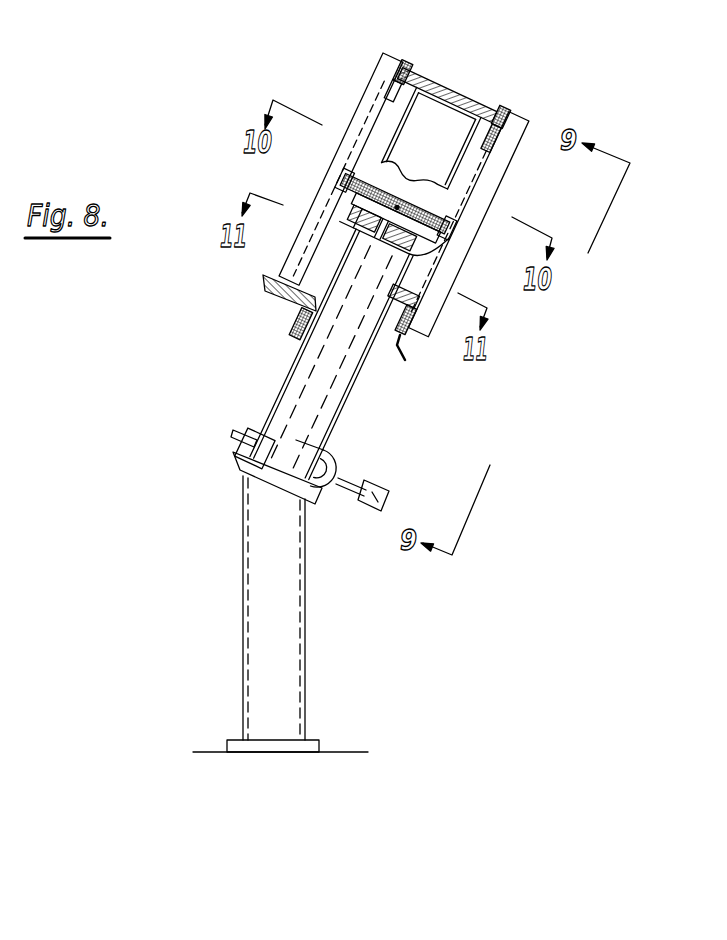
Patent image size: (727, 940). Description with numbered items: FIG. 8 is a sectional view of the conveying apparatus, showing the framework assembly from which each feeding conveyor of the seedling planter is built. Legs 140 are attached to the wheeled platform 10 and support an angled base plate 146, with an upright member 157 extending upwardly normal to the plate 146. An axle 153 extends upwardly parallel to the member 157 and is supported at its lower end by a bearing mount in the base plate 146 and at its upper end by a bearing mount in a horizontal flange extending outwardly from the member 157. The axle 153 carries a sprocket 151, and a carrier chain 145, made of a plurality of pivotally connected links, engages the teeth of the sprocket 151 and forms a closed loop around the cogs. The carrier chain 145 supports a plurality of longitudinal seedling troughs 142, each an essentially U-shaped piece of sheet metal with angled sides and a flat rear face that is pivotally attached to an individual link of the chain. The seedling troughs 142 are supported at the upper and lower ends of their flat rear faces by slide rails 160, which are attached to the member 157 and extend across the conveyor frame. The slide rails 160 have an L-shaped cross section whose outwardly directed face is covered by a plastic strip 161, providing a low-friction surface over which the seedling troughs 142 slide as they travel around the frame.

The wheeled platform 10 is at (348, 752).
The legs 140 is at (250, 607).
The seedling trough 142 is at (363, 112).
The carrier chain 145 is at (347, 181).
The angled base plate 146 is at (270, 477).
The sprocket 151 is at (425, 203).
The axle 153 is at (420, 244).
The member 157 is at (337, 387).
The slide rails 160 is at (402, 73).
The plastic strip 161 is at (395, 77).